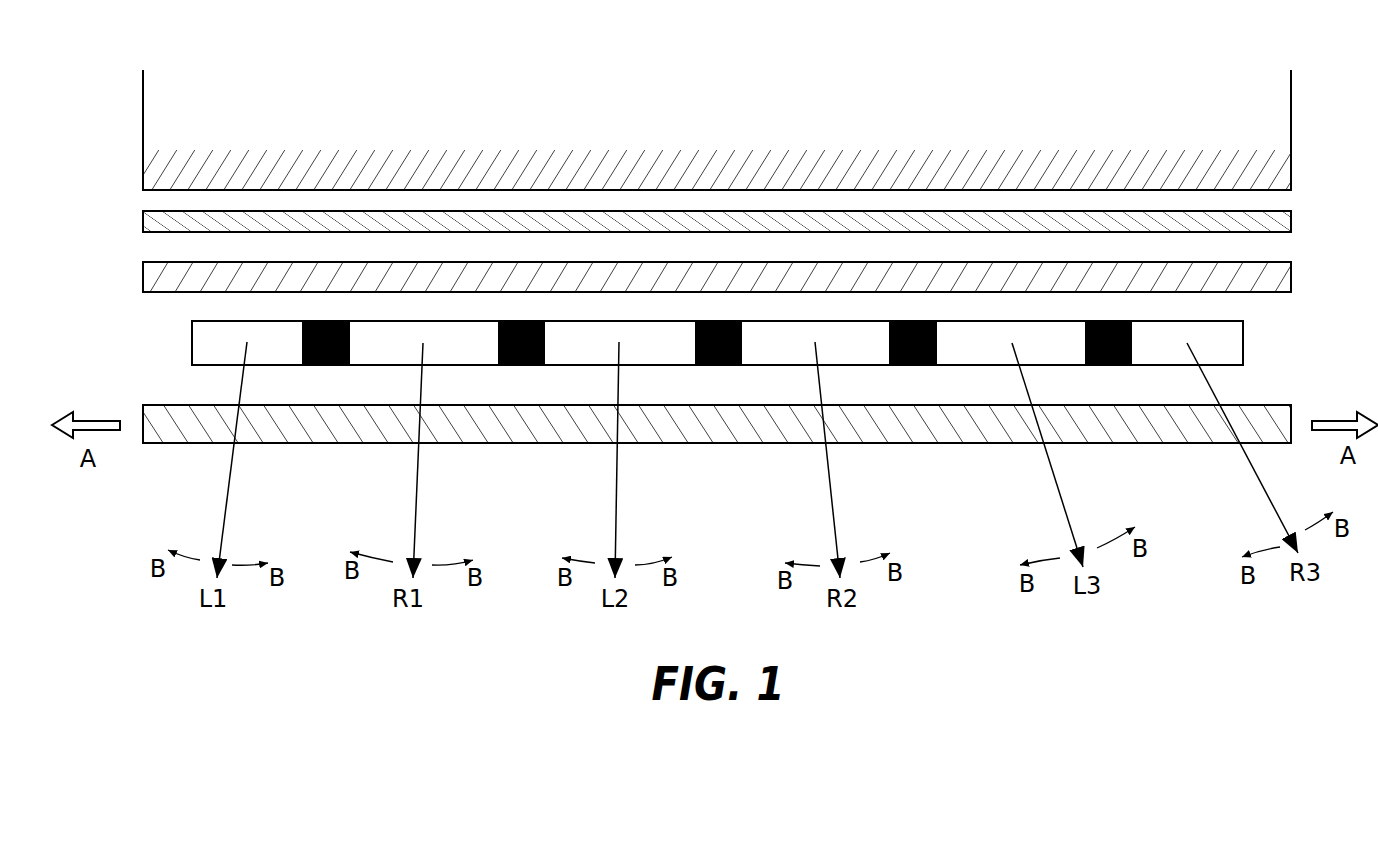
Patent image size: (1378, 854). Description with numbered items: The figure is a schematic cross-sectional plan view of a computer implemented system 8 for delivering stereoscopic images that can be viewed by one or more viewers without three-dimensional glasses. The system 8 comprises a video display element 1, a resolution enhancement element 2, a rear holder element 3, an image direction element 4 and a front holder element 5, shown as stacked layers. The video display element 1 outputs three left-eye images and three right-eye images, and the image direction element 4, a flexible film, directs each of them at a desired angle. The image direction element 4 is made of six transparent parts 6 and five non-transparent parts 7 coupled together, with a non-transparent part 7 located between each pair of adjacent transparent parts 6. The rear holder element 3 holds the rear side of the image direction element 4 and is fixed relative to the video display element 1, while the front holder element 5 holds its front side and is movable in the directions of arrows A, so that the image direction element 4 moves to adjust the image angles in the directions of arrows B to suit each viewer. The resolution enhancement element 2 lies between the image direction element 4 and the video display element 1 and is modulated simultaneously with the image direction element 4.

The video display element 1 is at (1291, 146).
The resolution enhancement element 2 is at (1293, 215).
The rear holder element 3 is at (1293, 283).
The image direction element 4 is at (1245, 342).
The front holder element 5 is at (1292, 412).
The transparent part 6 is at (212, 365).
The non-transparent part 7 is at (323, 367).
The computer implemented system 8 is at (104, 92).